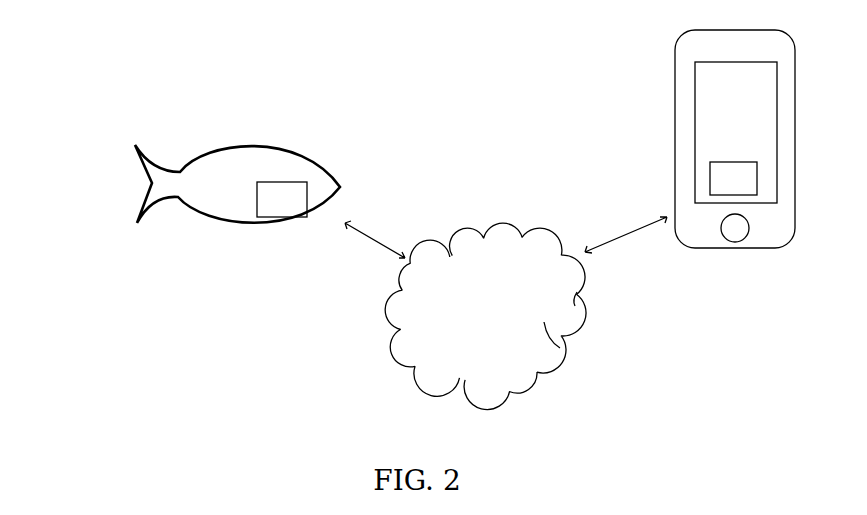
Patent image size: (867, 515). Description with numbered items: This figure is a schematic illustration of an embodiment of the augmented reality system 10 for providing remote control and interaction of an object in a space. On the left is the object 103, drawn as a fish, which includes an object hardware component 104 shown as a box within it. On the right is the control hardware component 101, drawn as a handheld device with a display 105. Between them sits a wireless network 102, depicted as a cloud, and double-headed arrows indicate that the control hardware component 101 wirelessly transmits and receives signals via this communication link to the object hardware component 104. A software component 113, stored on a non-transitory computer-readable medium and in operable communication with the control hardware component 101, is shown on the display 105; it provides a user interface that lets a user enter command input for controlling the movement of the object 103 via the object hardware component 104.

The augmented reality system 10 is at (97, 66).
The control hardware component 101 is at (695, 47).
The wireless network 102 is at (506, 313).
The object 103 is at (160, 167).
The object hardware component 104 is at (282, 199).
The display 105 is at (736, 132).
The software component 113 is at (733, 178).